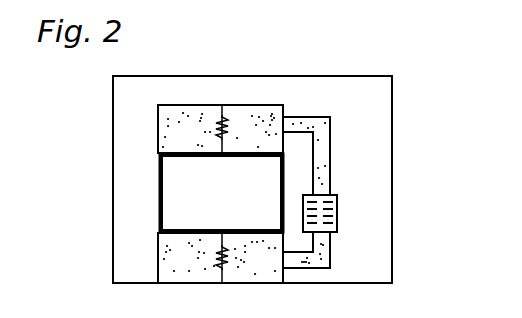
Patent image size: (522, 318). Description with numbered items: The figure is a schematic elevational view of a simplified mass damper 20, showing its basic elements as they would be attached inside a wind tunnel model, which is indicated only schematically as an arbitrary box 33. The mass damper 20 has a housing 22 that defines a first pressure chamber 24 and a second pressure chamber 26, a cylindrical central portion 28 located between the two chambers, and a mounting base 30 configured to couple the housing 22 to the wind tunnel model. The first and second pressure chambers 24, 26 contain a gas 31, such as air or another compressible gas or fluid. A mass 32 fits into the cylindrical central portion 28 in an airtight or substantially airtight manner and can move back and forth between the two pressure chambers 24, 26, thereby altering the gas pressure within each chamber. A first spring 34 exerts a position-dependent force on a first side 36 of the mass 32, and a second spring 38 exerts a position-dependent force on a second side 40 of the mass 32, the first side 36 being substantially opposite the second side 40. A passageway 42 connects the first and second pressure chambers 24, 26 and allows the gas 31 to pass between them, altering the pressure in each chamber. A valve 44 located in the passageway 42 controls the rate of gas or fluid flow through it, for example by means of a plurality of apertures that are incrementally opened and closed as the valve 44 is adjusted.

The mass damper 20 is at (350, 101).
The housing 22 is at (158, 135).
The first pressure chamber 24 is at (243, 110).
The second pressure chamber 26 is at (244, 273).
The cylindrical central portion 28 is at (163, 173).
The mounting base 30 is at (200, 274).
The gas 31 is at (186, 110).
The mass 32 is at (233, 206).
The box 33 is at (392, 213).
The first spring 34 is at (213, 127).
The first side 36 is at (255, 143).
The second spring 38 is at (216, 248).
The second side 40 is at (253, 236).
The passageway 42 is at (319, 187).
The valve 44 is at (337, 205).